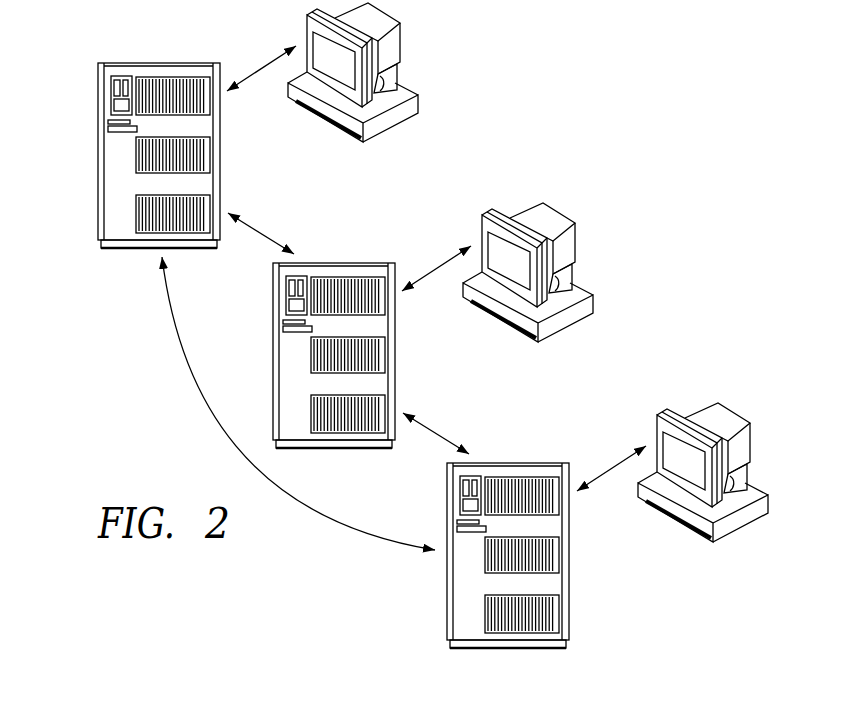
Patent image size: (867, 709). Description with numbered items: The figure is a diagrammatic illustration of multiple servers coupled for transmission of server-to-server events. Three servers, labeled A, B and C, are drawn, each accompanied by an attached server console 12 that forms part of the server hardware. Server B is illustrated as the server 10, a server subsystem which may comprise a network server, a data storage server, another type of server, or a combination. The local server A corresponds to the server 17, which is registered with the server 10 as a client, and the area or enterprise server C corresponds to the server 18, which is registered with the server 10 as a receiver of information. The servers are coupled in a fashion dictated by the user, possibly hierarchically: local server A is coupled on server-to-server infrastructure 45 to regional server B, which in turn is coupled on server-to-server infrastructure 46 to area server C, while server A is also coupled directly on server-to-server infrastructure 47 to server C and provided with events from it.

The server 10 is at (253, 351).
The server console 12 is at (551, 217).
The server 17 is at (78, 152).
The server 18 is at (589, 578).
The server-to-server infrastructure 45 is at (261, 229).
The server-to-server infrastructure 46 is at (434, 428).
The server-to-server infrastructure 47 is at (175, 343).